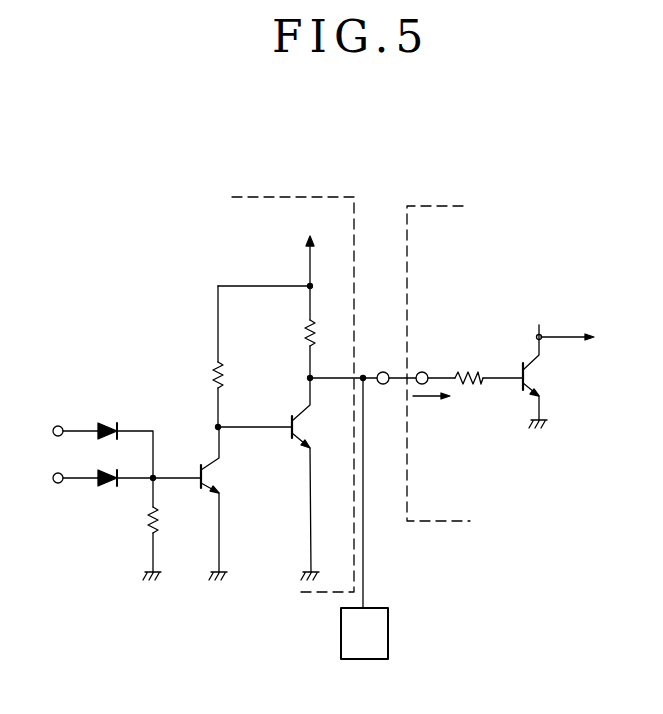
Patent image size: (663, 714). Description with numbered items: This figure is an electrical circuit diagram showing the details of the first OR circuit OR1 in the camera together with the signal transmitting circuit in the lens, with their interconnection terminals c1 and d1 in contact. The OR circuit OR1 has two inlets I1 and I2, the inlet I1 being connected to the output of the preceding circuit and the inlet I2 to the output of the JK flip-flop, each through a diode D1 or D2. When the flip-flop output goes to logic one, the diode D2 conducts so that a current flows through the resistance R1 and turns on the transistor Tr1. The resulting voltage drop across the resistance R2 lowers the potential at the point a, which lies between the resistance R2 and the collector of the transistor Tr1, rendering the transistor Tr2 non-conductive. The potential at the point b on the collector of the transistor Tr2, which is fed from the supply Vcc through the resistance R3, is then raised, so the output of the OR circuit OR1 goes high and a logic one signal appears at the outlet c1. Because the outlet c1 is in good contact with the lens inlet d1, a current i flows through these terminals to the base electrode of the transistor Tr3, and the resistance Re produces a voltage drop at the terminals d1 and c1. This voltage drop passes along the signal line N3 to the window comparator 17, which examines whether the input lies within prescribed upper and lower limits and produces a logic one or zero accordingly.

The first OR circuit OR1 is at (265, 205).
The supply voltage Vcc is at (326, 256).
The resistance R1 is at (164, 529).
The resistance R2 is at (232, 356).
The resistor R3 is at (324, 332).
The resistance Re is at (485, 352).
The diode D1 is at (125, 440).
The diode D2 is at (149, 468).
The transistor Tr1 is at (226, 503).
The transistor Tr2 is at (318, 479).
The transistor Tr3 is at (558, 376).
The inlet I1 is at (65, 432).
The inlet I2 is at (65, 479).
The point a is at (254, 417).
The point b is at (343, 368).
The outlet terminal c1 is at (384, 371).
The inlet terminal d1 is at (434, 367).
The current i is at (437, 397).
The signal line N3 is at (363, 575).
The window comparator 17 is at (364, 633).